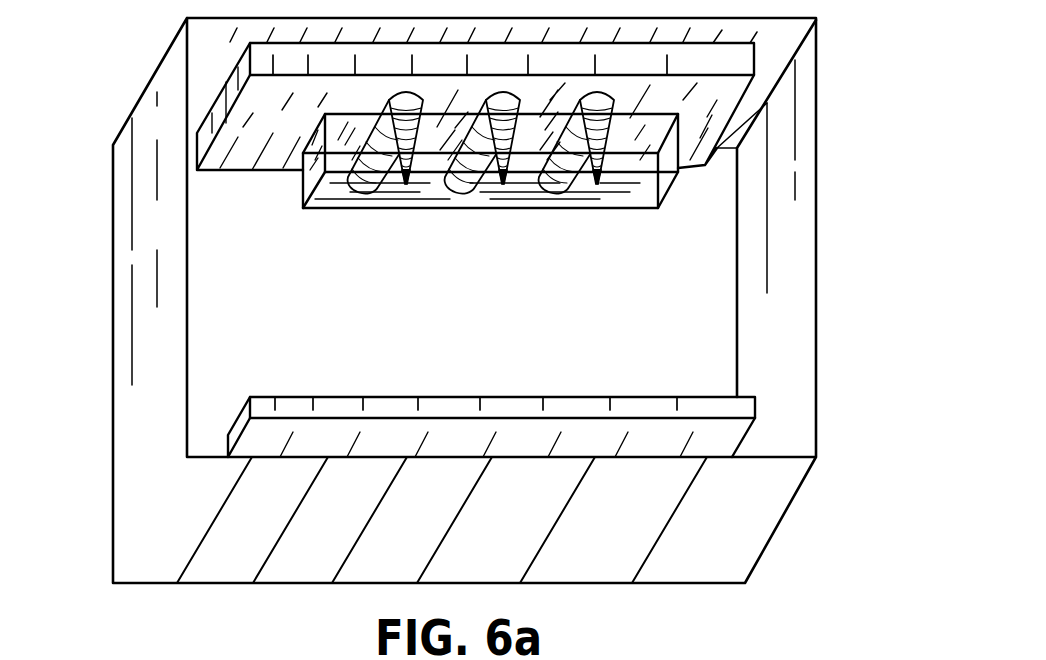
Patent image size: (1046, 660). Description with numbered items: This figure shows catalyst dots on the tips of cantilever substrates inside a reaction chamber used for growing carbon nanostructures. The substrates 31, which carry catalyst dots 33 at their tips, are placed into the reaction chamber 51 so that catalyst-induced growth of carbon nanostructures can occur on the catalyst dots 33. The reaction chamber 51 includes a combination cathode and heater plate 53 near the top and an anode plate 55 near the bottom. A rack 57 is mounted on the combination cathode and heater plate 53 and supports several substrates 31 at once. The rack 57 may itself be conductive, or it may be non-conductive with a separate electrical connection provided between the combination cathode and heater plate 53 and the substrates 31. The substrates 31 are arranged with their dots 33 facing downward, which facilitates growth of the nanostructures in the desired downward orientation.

The substrate 31 is at (597, 117).
The catalyst dot 33 is at (610, 172).
The reaction chamber 51 is at (816, 303).
The combination cathode and heater plate 53 is at (225, 104).
The anode plate 55 is at (228, 434).
The rack 57 is at (318, 163).